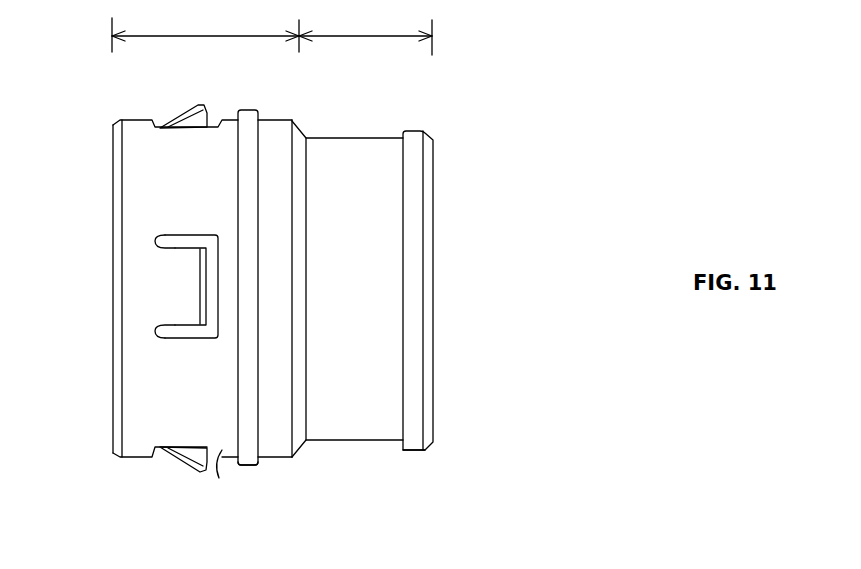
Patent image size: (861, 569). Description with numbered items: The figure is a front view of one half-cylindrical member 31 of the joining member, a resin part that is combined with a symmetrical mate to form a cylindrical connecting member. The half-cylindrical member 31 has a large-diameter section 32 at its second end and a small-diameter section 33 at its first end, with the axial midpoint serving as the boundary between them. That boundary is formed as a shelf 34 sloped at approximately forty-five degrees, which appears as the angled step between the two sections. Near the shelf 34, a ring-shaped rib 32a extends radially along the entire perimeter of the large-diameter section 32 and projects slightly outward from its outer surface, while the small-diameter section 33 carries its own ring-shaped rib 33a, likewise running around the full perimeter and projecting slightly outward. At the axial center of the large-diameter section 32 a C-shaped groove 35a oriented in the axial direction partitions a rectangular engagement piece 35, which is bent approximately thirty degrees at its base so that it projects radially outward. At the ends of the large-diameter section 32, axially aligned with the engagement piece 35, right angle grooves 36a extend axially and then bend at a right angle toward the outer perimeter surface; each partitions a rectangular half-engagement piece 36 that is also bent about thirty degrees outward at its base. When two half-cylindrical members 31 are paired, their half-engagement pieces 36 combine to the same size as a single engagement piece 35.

The half-cylindrical member 31 is at (393, 118).
The large-diameter section 32 is at (205, 29).
The ring-shaped rib 32a is at (258, 468).
The small-diameter section 33 is at (365, 31).
The ring-shaped rib 33a is at (415, 452).
The shelf 34 is at (300, 127).
The engagement piece 35 is at (165, 332).
The C-shaped groove 35a is at (168, 243).
The half-engagement piece 36 is at (178, 113).
The right angle groove 36a is at (219, 478).